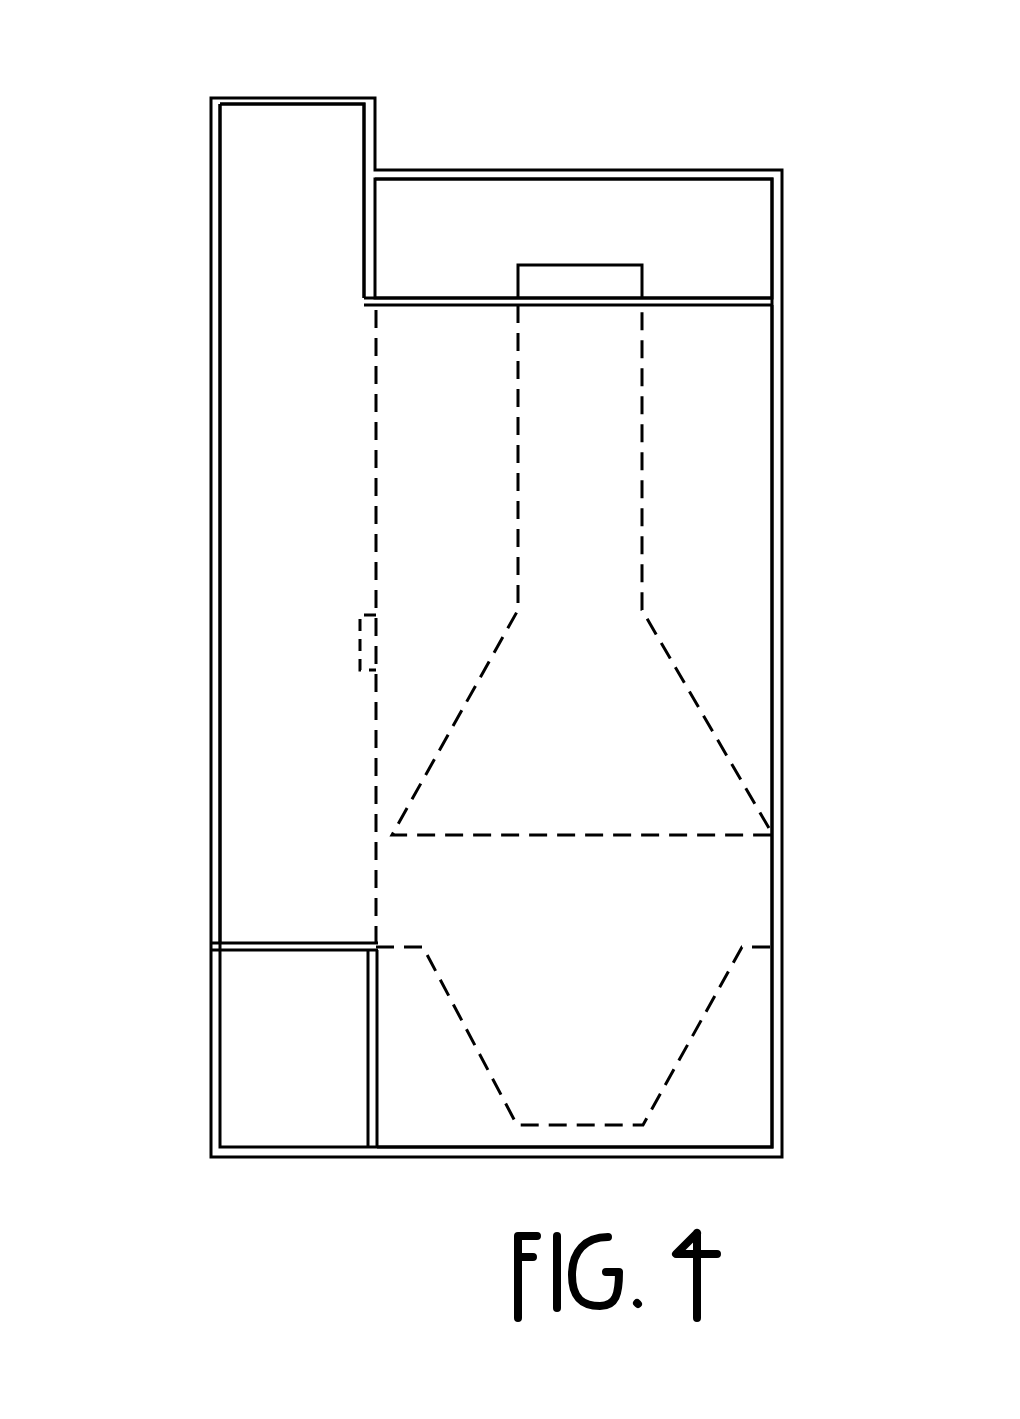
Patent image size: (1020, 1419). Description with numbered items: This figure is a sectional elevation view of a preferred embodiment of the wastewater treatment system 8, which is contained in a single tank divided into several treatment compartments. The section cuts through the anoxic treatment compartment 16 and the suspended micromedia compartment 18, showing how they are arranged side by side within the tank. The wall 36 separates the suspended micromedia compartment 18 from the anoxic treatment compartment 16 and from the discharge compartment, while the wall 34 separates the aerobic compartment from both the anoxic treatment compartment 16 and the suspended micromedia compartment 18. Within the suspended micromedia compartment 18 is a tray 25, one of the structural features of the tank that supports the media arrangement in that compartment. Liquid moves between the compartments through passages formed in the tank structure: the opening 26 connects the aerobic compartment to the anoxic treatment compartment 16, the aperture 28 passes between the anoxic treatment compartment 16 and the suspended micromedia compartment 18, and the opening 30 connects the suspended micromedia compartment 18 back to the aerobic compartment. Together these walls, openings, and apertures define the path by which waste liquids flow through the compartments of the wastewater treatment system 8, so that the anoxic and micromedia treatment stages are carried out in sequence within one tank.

The wastewater treatment system 8 is at (624, 101).
The anoxic treatment compartment 16 is at (290, 278).
The suspended micromedia compartment 18 is at (590, 235).
The tray 25 is at (727, 298).
The opening 26 is at (258, 1020).
The aperture 28 is at (358, 630).
The opening 30 is at (738, 215).
The wall 34 is at (727, 425).
The wall 36 is at (376, 440).